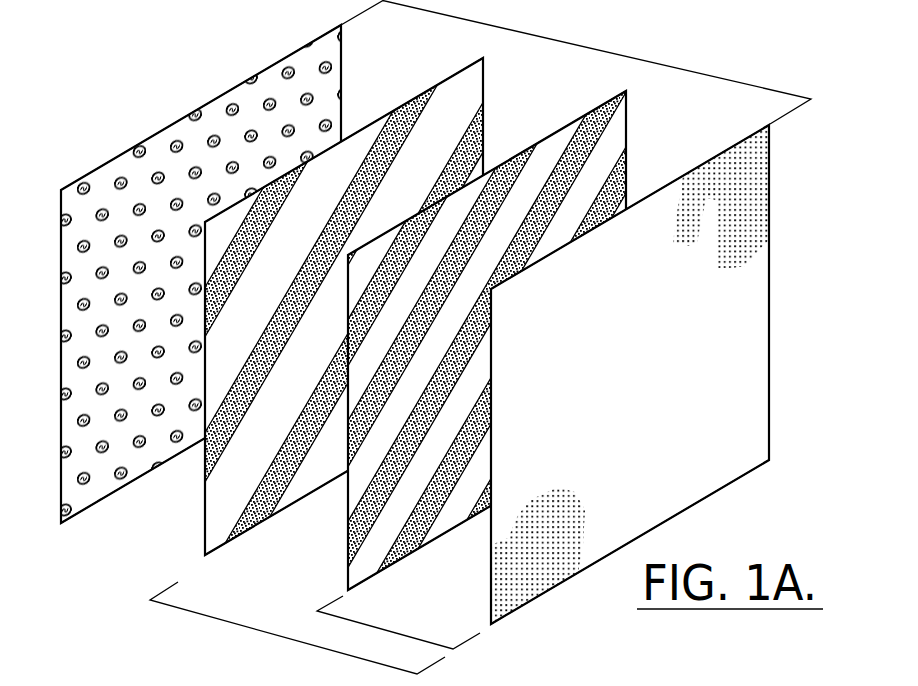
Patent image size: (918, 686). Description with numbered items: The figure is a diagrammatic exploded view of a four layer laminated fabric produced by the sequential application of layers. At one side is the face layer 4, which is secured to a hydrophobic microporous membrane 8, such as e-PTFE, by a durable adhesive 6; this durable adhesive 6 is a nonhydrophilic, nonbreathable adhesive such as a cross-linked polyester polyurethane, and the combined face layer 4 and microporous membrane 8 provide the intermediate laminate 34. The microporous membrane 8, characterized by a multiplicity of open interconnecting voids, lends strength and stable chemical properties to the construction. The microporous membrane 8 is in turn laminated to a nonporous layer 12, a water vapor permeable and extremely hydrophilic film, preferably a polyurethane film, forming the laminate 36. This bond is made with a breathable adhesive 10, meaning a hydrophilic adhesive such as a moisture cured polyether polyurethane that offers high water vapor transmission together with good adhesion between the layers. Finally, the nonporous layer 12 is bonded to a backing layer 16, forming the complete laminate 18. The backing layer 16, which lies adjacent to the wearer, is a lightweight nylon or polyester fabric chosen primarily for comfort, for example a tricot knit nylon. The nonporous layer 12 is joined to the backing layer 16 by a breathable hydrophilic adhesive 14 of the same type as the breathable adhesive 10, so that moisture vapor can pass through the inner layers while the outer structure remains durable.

The face layer 4 is at (630, 374).
The durable adhesive 6 is at (433, 343).
The microporous membrane 8 is at (433, 343).
The breathable adhesive 10 is at (286, 343).
The nonporous layer 12 is at (286, 343).
The breathable hydrophilic adhesive 14 is at (201, 272).
The backing layer 16 is at (201, 283).
The laminate 18 is at (576, 63).
The intermediate laminate 34 is at (398, 625).
The laminate 36 is at (297, 628).